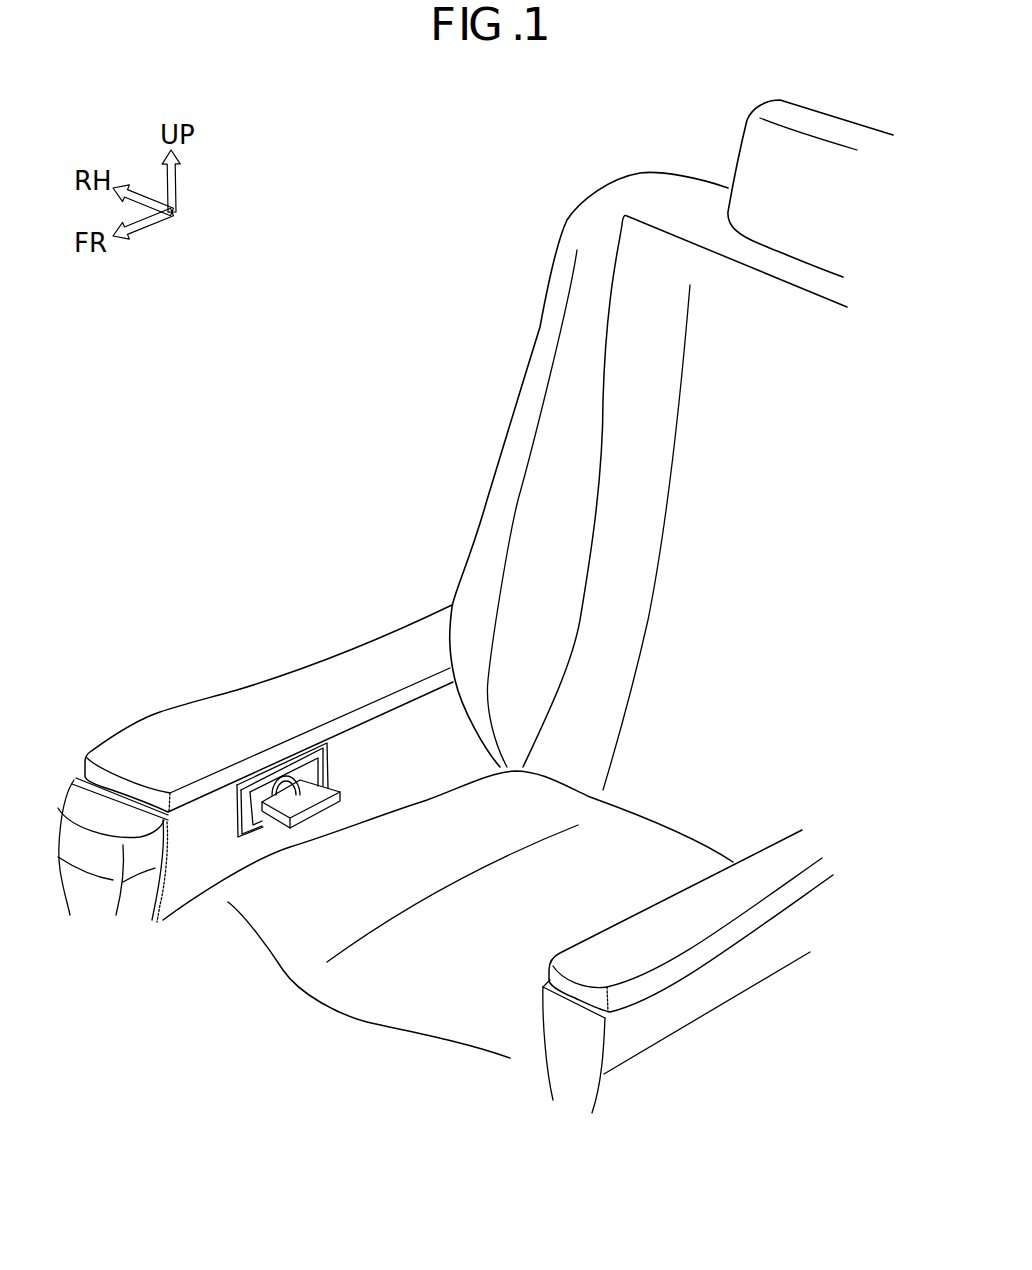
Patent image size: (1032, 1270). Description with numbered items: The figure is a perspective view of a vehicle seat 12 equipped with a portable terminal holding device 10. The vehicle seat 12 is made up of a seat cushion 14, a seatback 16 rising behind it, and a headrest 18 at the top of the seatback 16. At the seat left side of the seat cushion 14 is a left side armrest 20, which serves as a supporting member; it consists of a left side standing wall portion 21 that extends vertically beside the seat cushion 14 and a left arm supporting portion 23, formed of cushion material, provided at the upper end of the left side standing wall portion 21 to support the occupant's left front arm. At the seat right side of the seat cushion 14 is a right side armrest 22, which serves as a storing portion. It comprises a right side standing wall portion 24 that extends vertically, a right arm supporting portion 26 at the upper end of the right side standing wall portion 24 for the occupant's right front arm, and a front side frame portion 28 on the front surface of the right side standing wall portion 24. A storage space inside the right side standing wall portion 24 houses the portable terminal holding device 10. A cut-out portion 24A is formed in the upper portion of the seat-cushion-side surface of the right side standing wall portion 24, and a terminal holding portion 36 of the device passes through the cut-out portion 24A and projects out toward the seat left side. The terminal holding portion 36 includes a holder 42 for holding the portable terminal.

The portable terminal holding device 10 is at (237, 620).
The vehicle seat 12 is at (620, 481).
The seat cushion 14 is at (428, 795).
The seatback 16 is at (497, 470).
The headrest 18 is at (733, 158).
The left side armrest 20 is at (709, 921).
The left side standing wall portion 21 is at (722, 980).
The right side armrest 22 is at (254, 823).
The left arm supporting portion 23 is at (722, 902).
The right side standing wall portion 24 is at (295, 914).
The cut-out portion 24A is at (247, 843).
The right arm supporting portion 26 is at (307, 690).
The front side frame portion 28 is at (58, 800).
The terminal holding portion 36 is at (292, 847).
The holder 42 is at (340, 807).